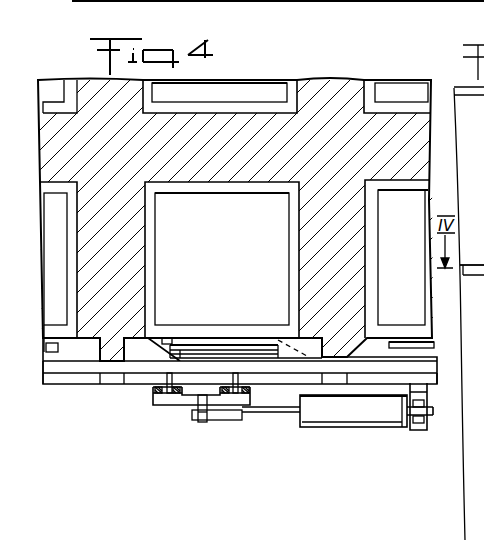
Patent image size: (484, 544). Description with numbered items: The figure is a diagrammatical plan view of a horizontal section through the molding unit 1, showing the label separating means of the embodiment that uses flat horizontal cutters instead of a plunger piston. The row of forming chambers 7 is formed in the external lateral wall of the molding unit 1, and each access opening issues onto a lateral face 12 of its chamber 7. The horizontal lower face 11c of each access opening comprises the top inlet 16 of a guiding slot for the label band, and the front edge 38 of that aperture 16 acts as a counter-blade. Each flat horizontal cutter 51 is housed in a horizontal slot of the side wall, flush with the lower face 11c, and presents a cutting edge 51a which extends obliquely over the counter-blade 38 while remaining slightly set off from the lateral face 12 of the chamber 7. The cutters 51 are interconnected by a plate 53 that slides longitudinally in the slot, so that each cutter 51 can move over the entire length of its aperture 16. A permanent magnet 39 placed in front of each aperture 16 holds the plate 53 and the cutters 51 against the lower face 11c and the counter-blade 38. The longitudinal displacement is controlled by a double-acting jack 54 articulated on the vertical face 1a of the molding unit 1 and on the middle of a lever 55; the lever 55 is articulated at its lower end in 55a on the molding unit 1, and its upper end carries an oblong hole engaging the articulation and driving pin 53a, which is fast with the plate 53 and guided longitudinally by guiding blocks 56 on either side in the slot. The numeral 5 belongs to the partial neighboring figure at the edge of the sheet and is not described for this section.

The molding unit 1 is at (140, 155).
The longitudinal vertical face 1a is at (79, 392).
The adjacent element 5 is at (472, 255).
The forming chamber 7 is at (65, 245).
The lower face of access opening 11c is at (182, 338).
The lateral face of chamber 12 is at (58, 333).
The top inlet of guiding slot 16 is at (49, 334).
The front edge of aperture 38 is at (204, 344).
The permanent magnet 39 is at (255, 350).
The flat horizontal cutter 51 is at (366, 345).
The cutting edge 51a is at (150, 365).
The plate 53 is at (63, 372).
The articulation and driving pin 53a is at (167, 407).
The double-acting jack 54 is at (375, 420).
The lever 55 is at (177, 402).
The lever articulation 55a is at (237, 421).
The guiding blocks 56 is at (110, 350).